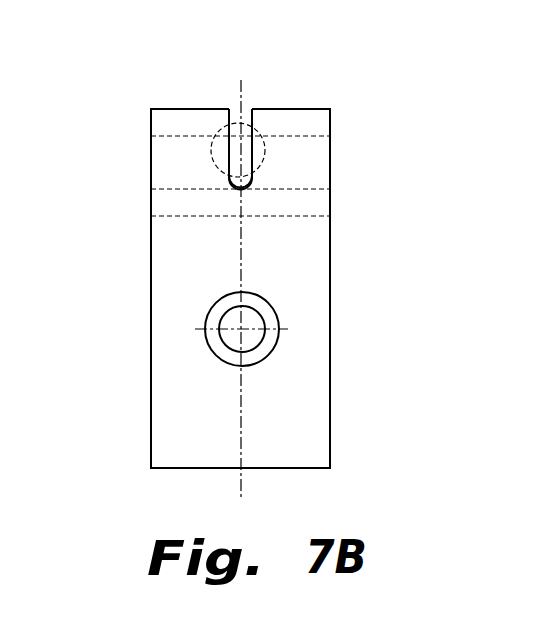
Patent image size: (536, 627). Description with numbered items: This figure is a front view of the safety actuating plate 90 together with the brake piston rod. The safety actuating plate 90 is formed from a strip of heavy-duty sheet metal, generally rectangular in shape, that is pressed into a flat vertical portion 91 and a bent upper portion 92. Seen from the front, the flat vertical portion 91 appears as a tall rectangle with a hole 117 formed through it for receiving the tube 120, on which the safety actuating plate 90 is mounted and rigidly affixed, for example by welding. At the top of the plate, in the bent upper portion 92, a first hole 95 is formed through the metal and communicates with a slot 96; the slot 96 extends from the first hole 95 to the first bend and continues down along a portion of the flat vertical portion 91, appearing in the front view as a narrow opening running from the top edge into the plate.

The safety actuating plate 90 is at (336, 255).
The flat vertical portion 91 is at (317, 422).
The bent upper portion 92 is at (333, 107).
The first hole 95 is at (212, 157).
The slot 96 is at (230, 181).
The hole 117 is at (278, 323).
The tube 120 is at (210, 342).